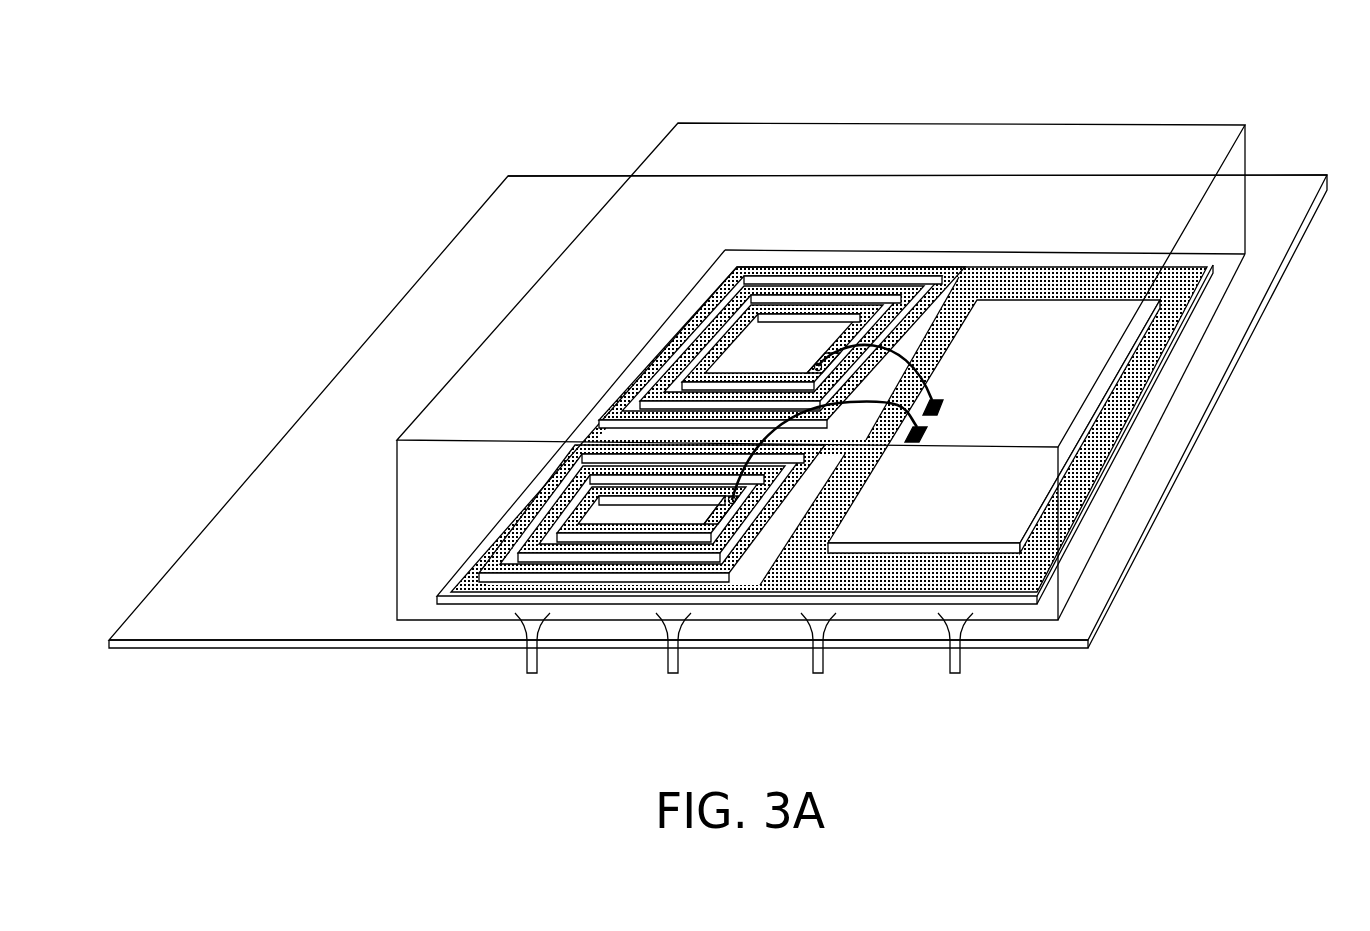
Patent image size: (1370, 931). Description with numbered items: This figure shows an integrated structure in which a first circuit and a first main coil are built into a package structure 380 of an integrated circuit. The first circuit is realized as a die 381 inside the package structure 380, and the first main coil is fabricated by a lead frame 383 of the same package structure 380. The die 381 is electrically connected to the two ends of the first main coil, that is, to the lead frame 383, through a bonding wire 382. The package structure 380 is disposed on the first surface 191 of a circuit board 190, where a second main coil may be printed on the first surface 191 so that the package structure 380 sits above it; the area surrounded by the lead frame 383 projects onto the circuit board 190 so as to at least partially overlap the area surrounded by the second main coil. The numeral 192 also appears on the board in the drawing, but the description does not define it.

The circuit board 190 is at (327, 642).
The first surface 191 is at (556, 197).
The substrate layer 192 is at (235, 649).
The package structure 380 is at (1212, 125).
The die 381 is at (980, 512).
The bonding wire 382 is at (948, 352).
The lead frame 383 is at (893, 265).